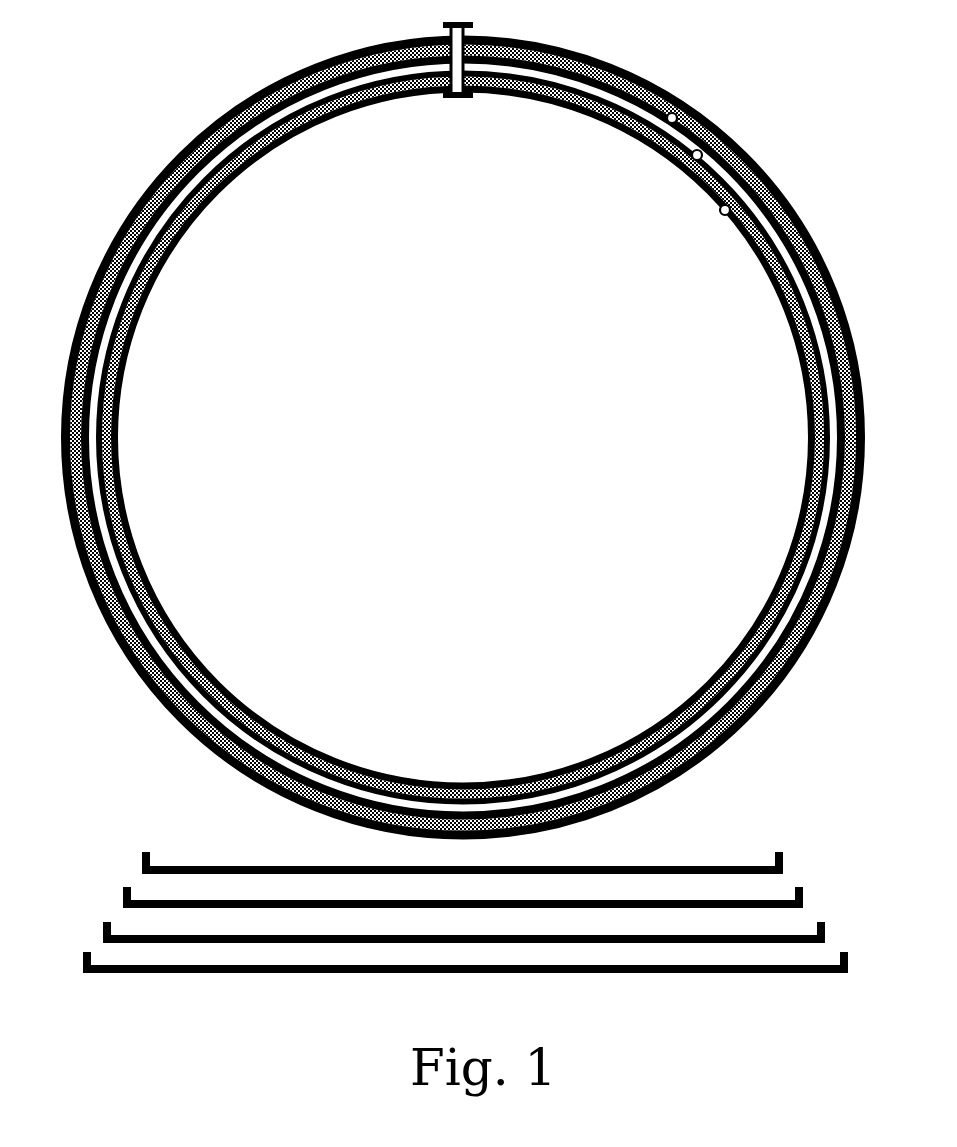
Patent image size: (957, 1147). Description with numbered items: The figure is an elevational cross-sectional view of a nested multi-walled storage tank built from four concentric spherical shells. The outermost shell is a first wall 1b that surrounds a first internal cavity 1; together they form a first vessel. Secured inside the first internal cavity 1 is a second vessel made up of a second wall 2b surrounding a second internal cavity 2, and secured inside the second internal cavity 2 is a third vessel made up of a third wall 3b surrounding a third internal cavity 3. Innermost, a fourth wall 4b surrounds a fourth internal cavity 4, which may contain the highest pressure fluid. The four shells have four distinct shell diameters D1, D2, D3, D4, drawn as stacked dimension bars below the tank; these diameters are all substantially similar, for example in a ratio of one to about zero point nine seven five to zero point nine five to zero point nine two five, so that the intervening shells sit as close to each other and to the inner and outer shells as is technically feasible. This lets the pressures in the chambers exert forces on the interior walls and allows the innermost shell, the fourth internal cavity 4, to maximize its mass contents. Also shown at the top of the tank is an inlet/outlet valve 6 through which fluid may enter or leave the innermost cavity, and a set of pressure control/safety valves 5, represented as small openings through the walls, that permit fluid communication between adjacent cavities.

The first internal cavity 1 is at (90, 583).
The first wall 1b is at (272, 90).
The second internal cavity 2 is at (128, 612).
The second wall 2b is at (222, 122).
The third internal cavity 3 is at (157, 637).
The third wall 3b is at (207, 167).
The fourth internal cavity 4 is at (205, 650).
The fourth wall 4b is at (197, 190).
The pressure control/safety valves 5 is at (726, 204).
The inlet/outlet valve 6 is at (435, 58).
The first shell diameter D1 is at (486, 964).
The second shell diameter D2 is at (485, 934).
The third shell diameter D3 is at (484, 899).
The fourth shell diameter D4 is at (483, 864).